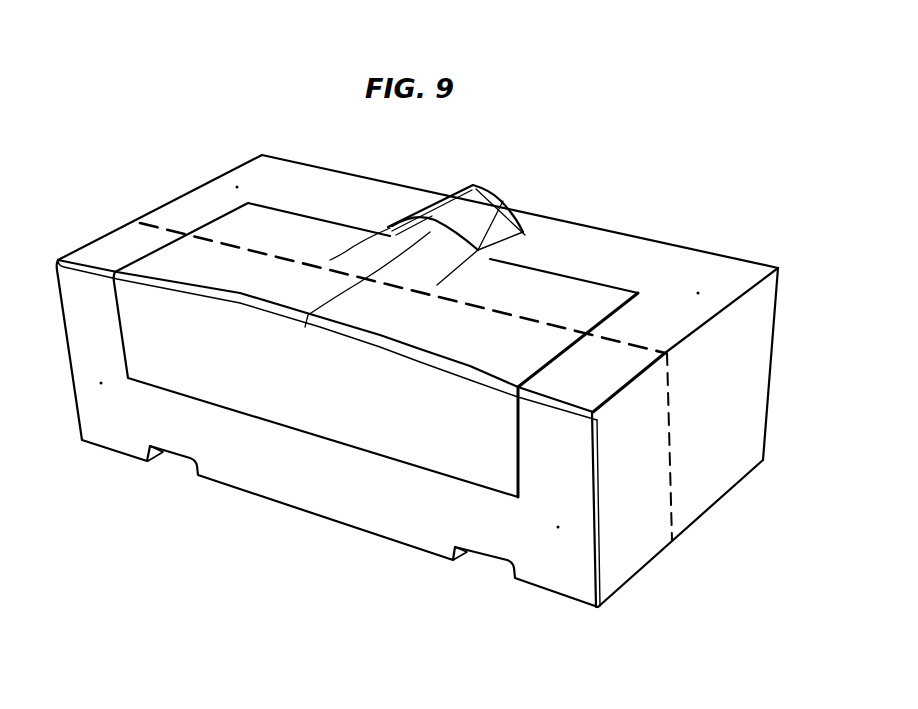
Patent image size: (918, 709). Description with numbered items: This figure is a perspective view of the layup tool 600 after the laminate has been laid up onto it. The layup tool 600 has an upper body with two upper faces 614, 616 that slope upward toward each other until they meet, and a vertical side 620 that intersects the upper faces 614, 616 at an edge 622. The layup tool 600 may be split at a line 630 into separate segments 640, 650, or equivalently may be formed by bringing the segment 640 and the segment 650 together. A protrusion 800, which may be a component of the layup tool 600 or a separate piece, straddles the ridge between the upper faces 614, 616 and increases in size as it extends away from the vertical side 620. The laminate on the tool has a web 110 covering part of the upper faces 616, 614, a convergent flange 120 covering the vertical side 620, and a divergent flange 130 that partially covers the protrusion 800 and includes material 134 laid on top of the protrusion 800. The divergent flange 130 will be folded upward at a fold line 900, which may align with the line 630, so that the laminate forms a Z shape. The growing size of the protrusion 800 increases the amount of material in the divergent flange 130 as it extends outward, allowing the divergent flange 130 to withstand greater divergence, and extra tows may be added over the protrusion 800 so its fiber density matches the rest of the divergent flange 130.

The web 110 is at (172, 258).
The convergent flange 120 is at (388, 420).
The divergent flange 130 is at (557, 287).
The material 134 is at (430, 233).
The layup tool 600 is at (733, 521).
The upper face 614 is at (690, 262).
The upper face 616 is at (300, 172).
The vertical side 620 is at (388, 510).
The edge 622 is at (559, 400).
The line 630 is at (670, 435).
The segment 640 is at (650, 569).
The segment 650 is at (748, 483).
The protrusion 800 is at (475, 186).
The fold line 900 is at (527, 318).